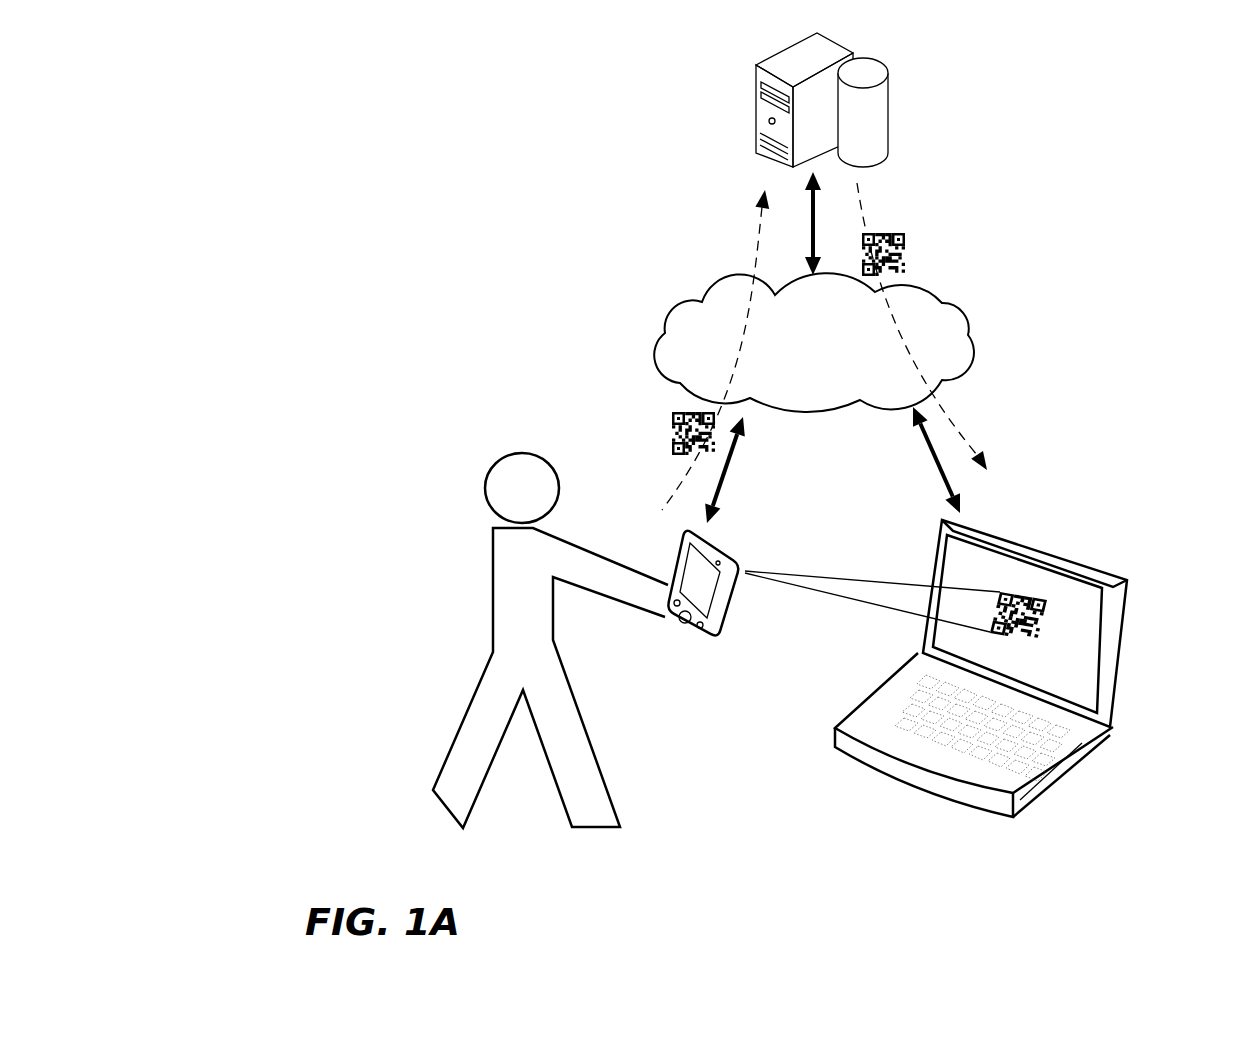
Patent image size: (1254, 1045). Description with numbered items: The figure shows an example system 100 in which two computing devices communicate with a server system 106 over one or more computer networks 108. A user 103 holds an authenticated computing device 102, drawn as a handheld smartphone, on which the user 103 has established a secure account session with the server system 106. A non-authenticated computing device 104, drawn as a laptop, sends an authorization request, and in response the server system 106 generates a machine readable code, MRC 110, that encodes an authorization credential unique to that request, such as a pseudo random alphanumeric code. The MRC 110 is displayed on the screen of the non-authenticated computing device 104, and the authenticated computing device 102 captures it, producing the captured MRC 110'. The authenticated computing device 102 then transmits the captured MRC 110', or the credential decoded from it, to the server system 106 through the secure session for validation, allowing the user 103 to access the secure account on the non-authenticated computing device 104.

The system 100 is at (405, 212).
The authenticated computing device 102 is at (705, 642).
The user 103 is at (483, 478).
The non-authenticated computing device 104 is at (1112, 660).
The server system 106 is at (757, 103).
The computer networks 108 is at (812, 382).
The MRC 110 is at (1007, 437).
The captured MRC 110' is at (637, 415).